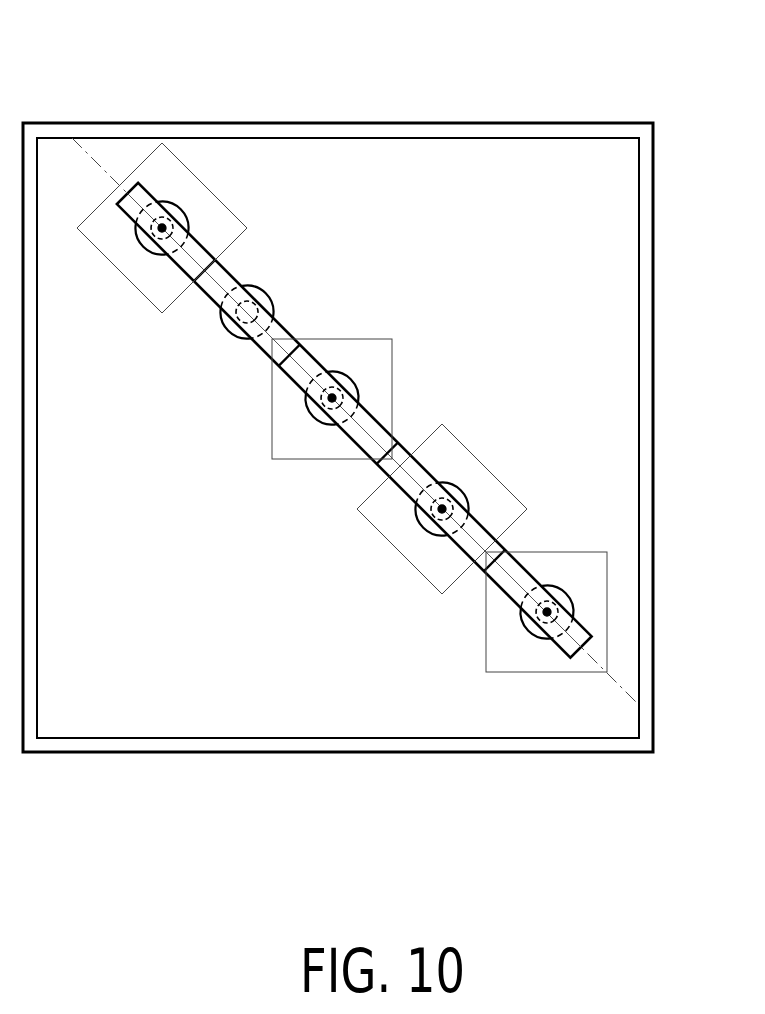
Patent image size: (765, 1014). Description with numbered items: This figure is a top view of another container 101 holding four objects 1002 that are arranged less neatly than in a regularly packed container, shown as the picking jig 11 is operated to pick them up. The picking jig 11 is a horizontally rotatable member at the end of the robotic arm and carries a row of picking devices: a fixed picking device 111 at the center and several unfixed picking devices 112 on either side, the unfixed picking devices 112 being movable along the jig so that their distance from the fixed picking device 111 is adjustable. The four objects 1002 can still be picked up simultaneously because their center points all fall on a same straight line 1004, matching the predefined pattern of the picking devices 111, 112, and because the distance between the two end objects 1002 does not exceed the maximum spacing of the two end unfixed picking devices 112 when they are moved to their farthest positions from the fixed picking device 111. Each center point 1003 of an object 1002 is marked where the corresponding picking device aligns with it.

The container 101 is at (610, 122).
The straight line 1004 is at (617, 683).
The picking jig 11 is at (263, 350).
The object 1002 is at (153, 304).
The unfixed picking device 112 is at (181, 210).
The fixed picking device 111 is at (350, 378).
The centre point 1003 is at (158, 231).